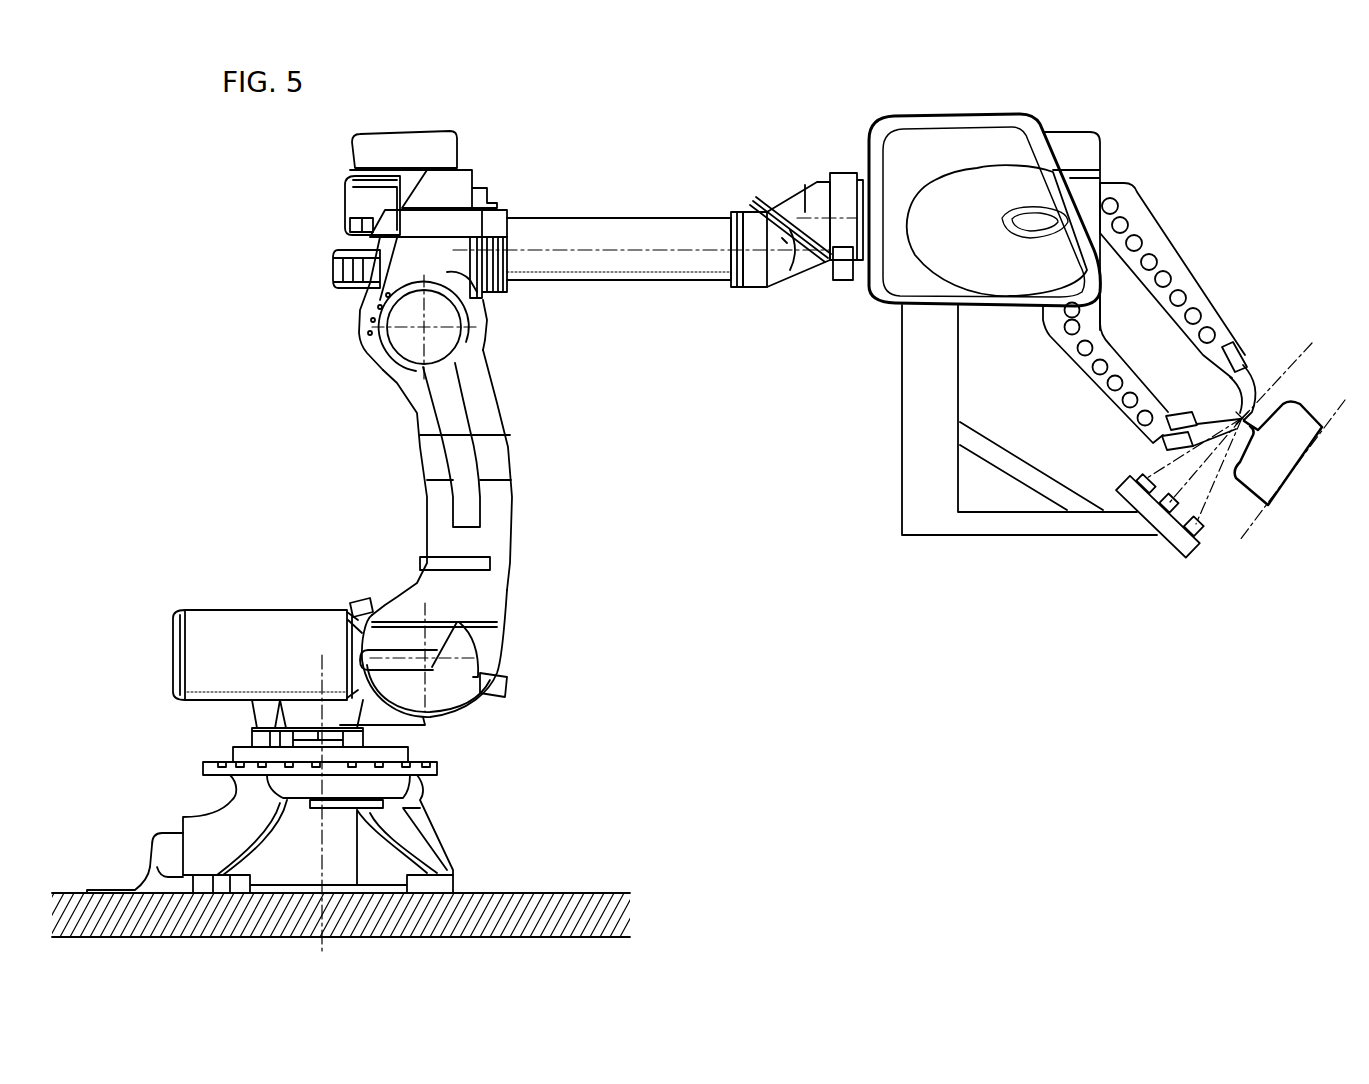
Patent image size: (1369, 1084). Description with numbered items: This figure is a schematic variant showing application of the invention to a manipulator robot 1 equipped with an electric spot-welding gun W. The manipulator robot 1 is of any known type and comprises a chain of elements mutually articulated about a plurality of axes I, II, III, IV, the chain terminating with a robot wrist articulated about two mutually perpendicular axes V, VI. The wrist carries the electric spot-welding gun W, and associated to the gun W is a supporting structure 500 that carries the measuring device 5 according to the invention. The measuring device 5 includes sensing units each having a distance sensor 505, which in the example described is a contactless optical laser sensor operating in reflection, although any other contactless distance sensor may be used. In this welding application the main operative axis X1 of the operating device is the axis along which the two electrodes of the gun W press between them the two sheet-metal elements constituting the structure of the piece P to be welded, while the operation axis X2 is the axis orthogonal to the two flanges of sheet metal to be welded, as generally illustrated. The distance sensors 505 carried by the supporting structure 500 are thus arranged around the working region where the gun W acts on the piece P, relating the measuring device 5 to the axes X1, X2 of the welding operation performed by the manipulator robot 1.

The manipulator robot 1 is at (288, 442).
The axis I is at (323, 843).
The axis II is at (420, 652).
The axis III is at (383, 345).
The axis IV is at (618, 253).
The wrist axis V is at (795, 287).
The wrist axis VI is at (838, 208).
The electric spot-welding gun W is at (1024, 107).
The supporting structure 500 is at (913, 470).
The distance sensor 505 is at (1137, 477).
The measuring device 5 is at (1188, 568).
The main operative axis X1 is at (1284, 338).
The operation axis X2 is at (1287, 363).
The piece to be welded P is at (1305, 403).